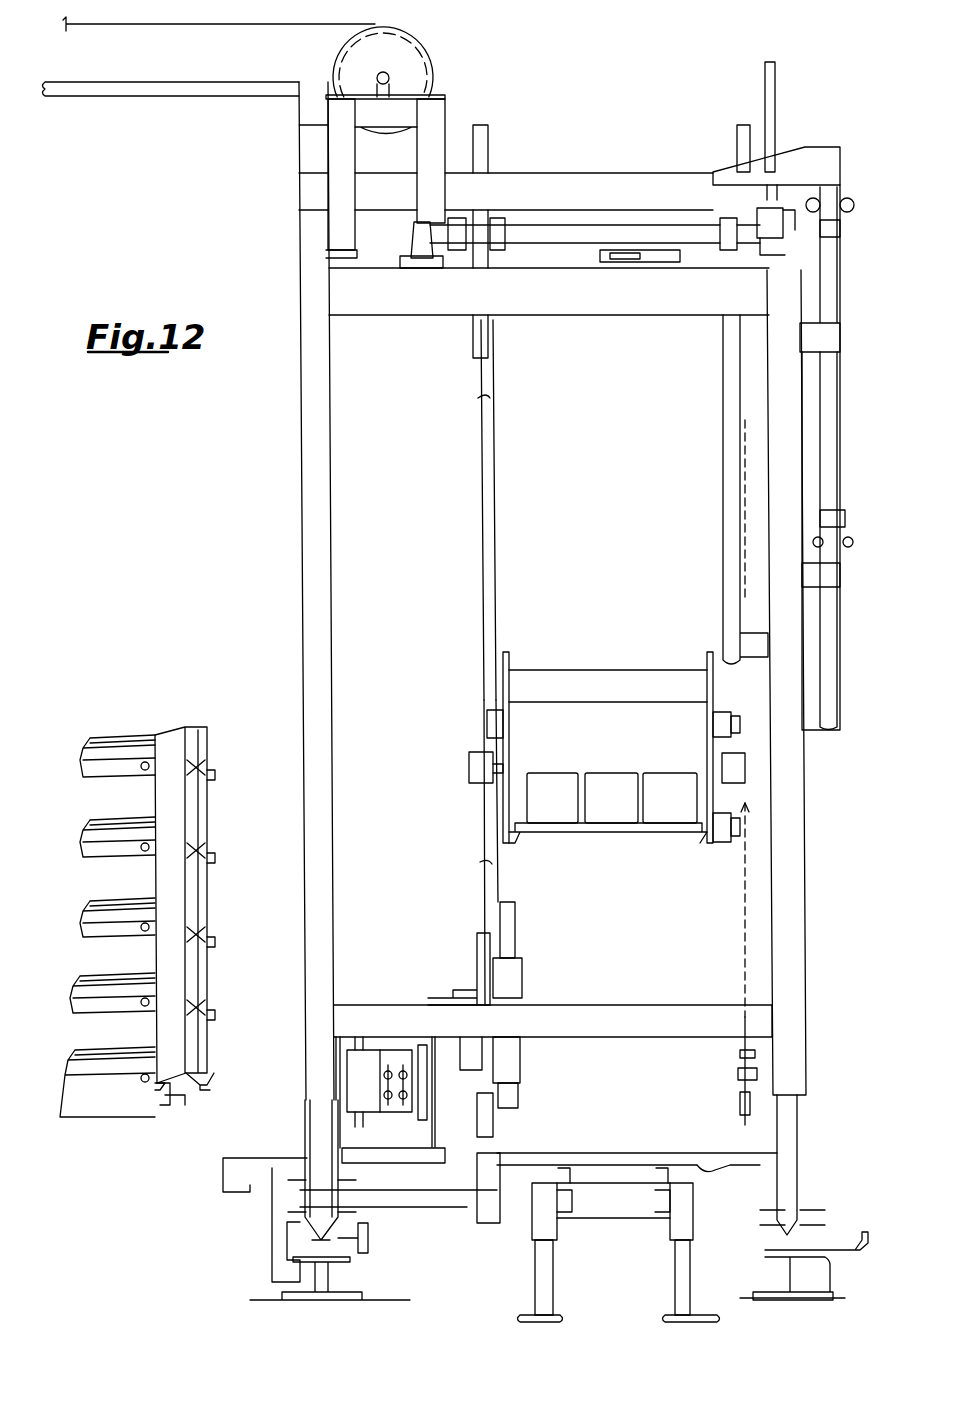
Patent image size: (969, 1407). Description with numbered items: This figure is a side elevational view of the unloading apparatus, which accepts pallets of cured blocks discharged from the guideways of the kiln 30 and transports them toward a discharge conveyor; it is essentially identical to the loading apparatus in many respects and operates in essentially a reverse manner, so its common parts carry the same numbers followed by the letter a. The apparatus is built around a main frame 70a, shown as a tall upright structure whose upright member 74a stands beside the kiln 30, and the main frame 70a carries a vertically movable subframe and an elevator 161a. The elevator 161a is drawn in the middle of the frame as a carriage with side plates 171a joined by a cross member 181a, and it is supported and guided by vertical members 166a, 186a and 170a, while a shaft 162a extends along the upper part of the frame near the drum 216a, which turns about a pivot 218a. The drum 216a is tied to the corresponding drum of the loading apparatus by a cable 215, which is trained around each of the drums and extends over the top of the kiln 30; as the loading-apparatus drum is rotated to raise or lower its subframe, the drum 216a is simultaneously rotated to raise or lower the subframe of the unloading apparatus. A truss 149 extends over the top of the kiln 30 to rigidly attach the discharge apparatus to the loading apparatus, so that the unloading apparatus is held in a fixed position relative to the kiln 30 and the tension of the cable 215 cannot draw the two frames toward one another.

The kiln 30 is at (220, 795).
The main frame 70a is at (286, 451).
The upright post 74a is at (304, 553).
The truss 149 is at (77, 82).
The cable 215 is at (218, 26).
The drum 216a is at (418, 48).
The pivot pin 218a is at (390, 77).
The drive shaft 162a is at (540, 245).
The guide bar 166a is at (473, 340).
The vertical rod 186a is at (481, 458).
The lift rod 170a is at (483, 890).
The elevator 161a is at (463, 735).
The carrier side plate 171a is at (714, 693).
The carrier cross member 181a is at (605, 680).